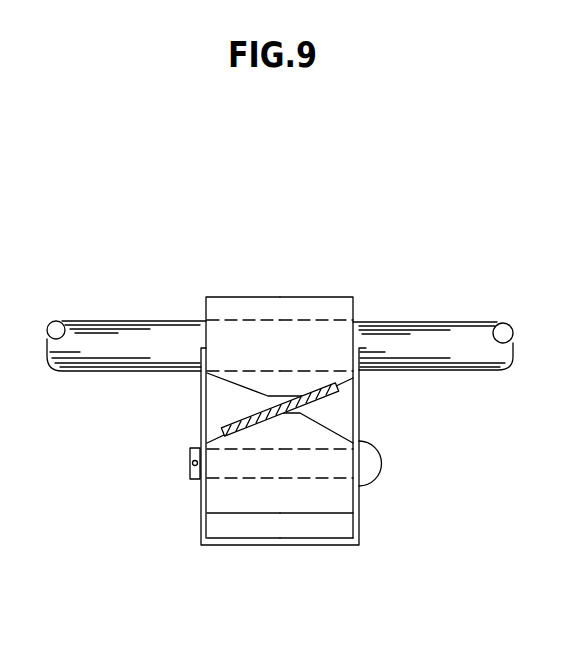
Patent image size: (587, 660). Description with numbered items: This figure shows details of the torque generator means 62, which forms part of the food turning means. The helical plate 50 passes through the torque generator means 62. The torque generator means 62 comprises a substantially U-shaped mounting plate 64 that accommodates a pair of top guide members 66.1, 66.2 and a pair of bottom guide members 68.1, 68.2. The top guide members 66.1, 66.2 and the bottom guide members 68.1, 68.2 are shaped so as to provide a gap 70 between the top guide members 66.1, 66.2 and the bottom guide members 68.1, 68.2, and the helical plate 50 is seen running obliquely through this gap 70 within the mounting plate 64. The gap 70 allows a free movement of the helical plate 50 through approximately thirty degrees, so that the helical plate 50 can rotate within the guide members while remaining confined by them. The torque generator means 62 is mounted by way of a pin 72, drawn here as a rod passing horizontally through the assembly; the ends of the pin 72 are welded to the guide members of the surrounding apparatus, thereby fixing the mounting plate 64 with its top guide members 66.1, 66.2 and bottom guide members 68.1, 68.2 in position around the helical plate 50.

The torque generator means 62 is at (413, 200).
The pin 72 is at (465, 330).
The U-shaped mounting plate 64 is at (357, 523).
The top guide member 66.1 is at (241, 310).
The top guide member 66.2 is at (335, 305).
The gap 70 is at (230, 410).
The helical plate 50 is at (325, 403).
The bottom guide member 68.1 is at (237, 497).
The bottom guide member 68.2 is at (312, 500).